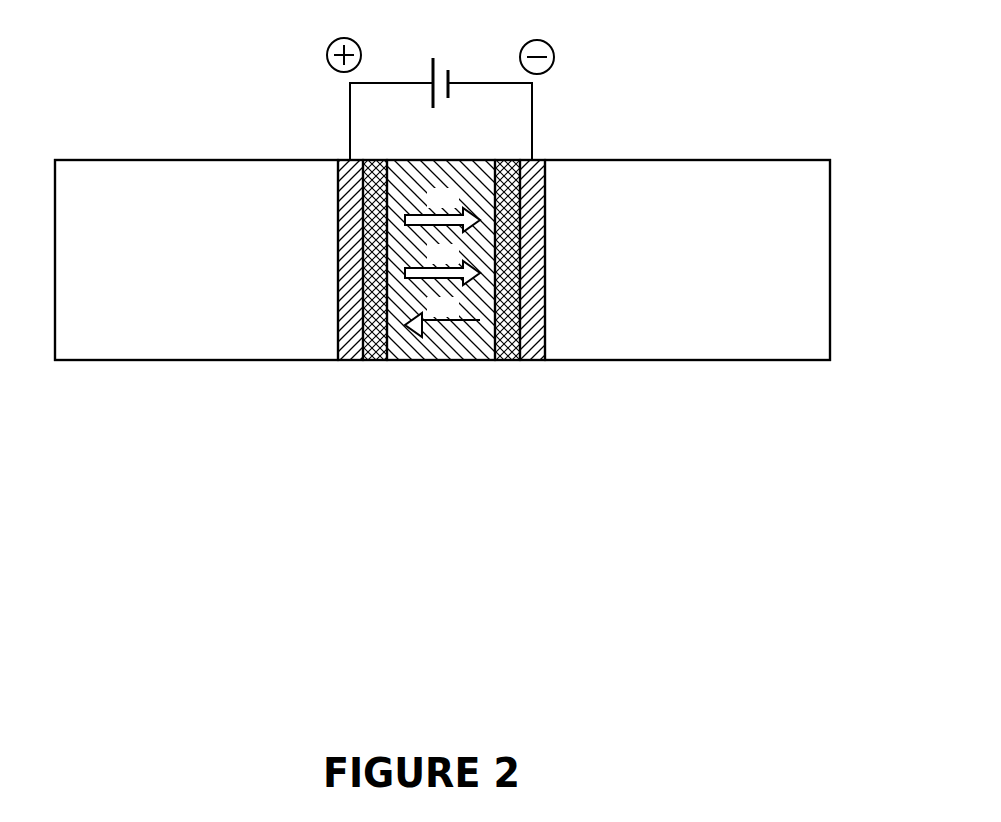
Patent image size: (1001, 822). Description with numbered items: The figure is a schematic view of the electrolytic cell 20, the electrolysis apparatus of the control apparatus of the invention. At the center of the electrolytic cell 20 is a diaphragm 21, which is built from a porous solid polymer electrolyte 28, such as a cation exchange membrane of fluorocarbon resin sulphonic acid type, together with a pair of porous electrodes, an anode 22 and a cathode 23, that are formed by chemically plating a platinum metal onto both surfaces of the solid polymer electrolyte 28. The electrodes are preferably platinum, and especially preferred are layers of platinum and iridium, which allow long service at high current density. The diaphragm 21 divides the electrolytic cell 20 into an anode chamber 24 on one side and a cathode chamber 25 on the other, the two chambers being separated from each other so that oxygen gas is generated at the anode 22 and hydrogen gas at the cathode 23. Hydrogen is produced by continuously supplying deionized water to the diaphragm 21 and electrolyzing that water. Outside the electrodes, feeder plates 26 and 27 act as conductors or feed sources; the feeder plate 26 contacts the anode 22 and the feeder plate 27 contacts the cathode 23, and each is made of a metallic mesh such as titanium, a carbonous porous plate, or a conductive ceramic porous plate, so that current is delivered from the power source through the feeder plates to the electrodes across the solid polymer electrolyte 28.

The electrolytic cell 20 is at (762, 60).
The diaphragm 21 is at (468, 374).
The anode 22 is at (372, 159).
The cathode 23 is at (508, 160).
The anode chamber 24 is at (165, 347).
The cathode chamber 25 is at (718, 350).
The feeder plate 26 is at (342, 362).
The feeder plate 27 is at (533, 360).
The solid polymer electrolyte 28 is at (427, 360).